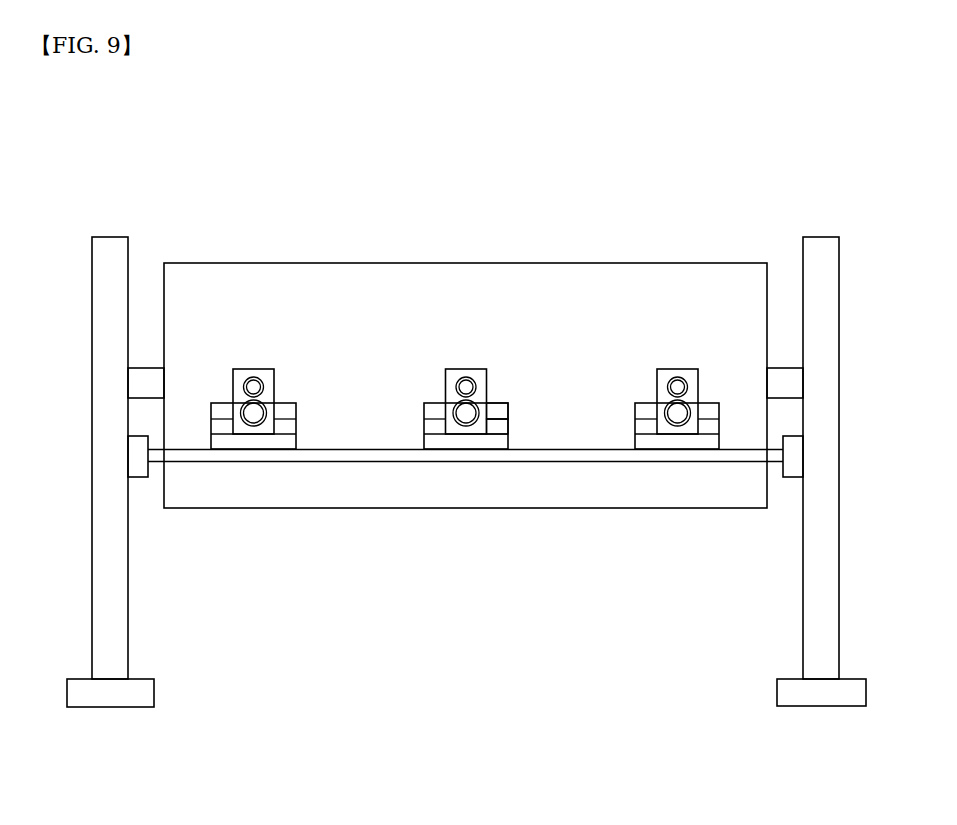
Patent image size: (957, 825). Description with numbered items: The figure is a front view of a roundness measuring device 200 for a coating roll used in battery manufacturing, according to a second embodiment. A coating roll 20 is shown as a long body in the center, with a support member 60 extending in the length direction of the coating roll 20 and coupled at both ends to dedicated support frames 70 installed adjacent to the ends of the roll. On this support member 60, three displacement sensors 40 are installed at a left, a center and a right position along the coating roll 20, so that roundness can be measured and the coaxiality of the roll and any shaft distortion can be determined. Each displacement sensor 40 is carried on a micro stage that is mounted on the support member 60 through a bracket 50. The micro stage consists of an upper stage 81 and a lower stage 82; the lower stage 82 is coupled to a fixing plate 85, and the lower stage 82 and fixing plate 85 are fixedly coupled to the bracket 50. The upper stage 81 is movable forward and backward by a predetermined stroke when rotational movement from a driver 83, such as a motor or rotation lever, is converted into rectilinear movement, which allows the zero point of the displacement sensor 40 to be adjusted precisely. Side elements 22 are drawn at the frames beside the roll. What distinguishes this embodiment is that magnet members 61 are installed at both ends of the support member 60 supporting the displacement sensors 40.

The roundness measuring device 200 is at (828, 147).
The coating roll 20 is at (287, 280).
The side bracket 22 is at (147, 367).
The displacement sensor 40 is at (466, 383).
The bracket 50 is at (437, 440).
The support member 60 is at (705, 461).
The magnet member 61 is at (138, 470).
The support frame 70 is at (103, 533).
The upper stage 81 is at (497, 410).
The lower stage 82 is at (494, 440).
The driver 83 is at (466, 428).
The fixing plate 85 is at (241, 432).